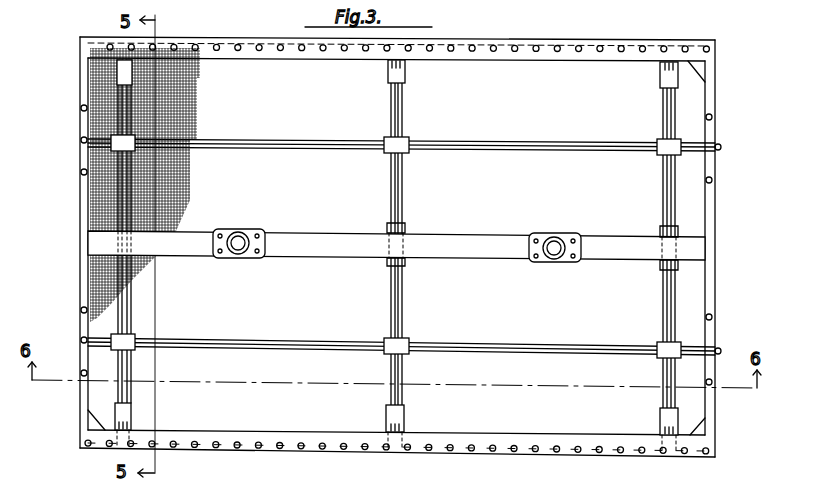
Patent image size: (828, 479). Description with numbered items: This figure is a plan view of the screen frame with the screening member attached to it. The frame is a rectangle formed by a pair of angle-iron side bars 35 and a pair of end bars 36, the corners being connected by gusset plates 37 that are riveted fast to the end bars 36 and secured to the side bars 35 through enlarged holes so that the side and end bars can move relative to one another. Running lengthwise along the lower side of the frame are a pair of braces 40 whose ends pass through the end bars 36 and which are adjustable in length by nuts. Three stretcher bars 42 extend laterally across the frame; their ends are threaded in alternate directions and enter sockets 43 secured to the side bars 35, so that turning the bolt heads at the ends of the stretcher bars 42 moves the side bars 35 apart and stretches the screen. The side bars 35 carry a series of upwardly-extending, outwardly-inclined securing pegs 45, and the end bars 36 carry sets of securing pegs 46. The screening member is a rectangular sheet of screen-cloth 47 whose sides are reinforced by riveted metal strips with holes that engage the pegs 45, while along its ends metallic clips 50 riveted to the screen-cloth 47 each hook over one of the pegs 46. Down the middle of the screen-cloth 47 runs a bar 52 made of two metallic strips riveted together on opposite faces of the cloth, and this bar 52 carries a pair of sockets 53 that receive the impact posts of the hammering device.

The side bars 35 is at (571, 50).
The end bars 36 is at (80, 282).
The gusset plates 37 is at (700, 432).
The braces 40 is at (513, 144).
The stretcher bars 42 is at (402, 183).
The sockets 43 is at (661, 80).
The securing pegs 45 is at (461, 44).
The securing pegs 46 is at (82, 176).
The sheet of screen-cloth 47 is at (178, 52).
The metallic clips 50 is at (81, 111).
The bar 52 is at (418, 247).
The sockets 53 is at (246, 233).